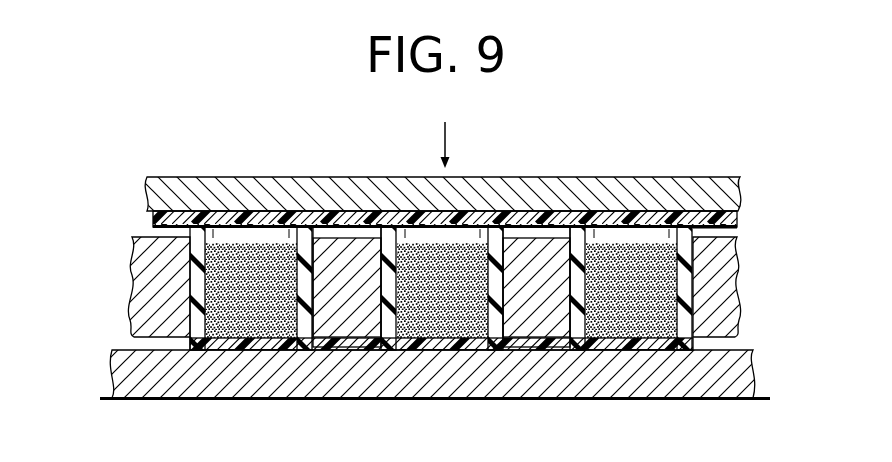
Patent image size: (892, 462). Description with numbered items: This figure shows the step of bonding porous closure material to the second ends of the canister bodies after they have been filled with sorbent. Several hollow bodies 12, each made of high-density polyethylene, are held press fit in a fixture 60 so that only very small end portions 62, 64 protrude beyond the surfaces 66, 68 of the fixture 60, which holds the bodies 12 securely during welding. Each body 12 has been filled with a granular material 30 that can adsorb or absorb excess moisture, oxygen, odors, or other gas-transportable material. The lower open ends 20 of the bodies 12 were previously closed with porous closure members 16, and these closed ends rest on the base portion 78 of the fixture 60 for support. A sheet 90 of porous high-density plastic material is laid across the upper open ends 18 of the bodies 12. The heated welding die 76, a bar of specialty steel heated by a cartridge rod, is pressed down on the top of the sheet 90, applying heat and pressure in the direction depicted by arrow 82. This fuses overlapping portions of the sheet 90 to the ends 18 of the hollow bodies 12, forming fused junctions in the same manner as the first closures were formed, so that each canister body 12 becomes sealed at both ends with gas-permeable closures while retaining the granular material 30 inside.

The hollow body 12 is at (439, 287).
The porous closure member 16 is at (245, 350).
The open end 18 is at (248, 214).
The open end 20 is at (600, 340).
The granular material 30 is at (197, 314).
The fixture 60 is at (720, 282).
The end portion 62 is at (695, 232).
The end portion 64 is at (188, 343).
The surface 66 is at (532, 340).
The surface 68 is at (346, 232).
The heated welding die 76 is at (695, 186).
The base portion 78 is at (742, 372).
The arrow 82 is at (446, 137).
The sheet 90 is at (740, 222).